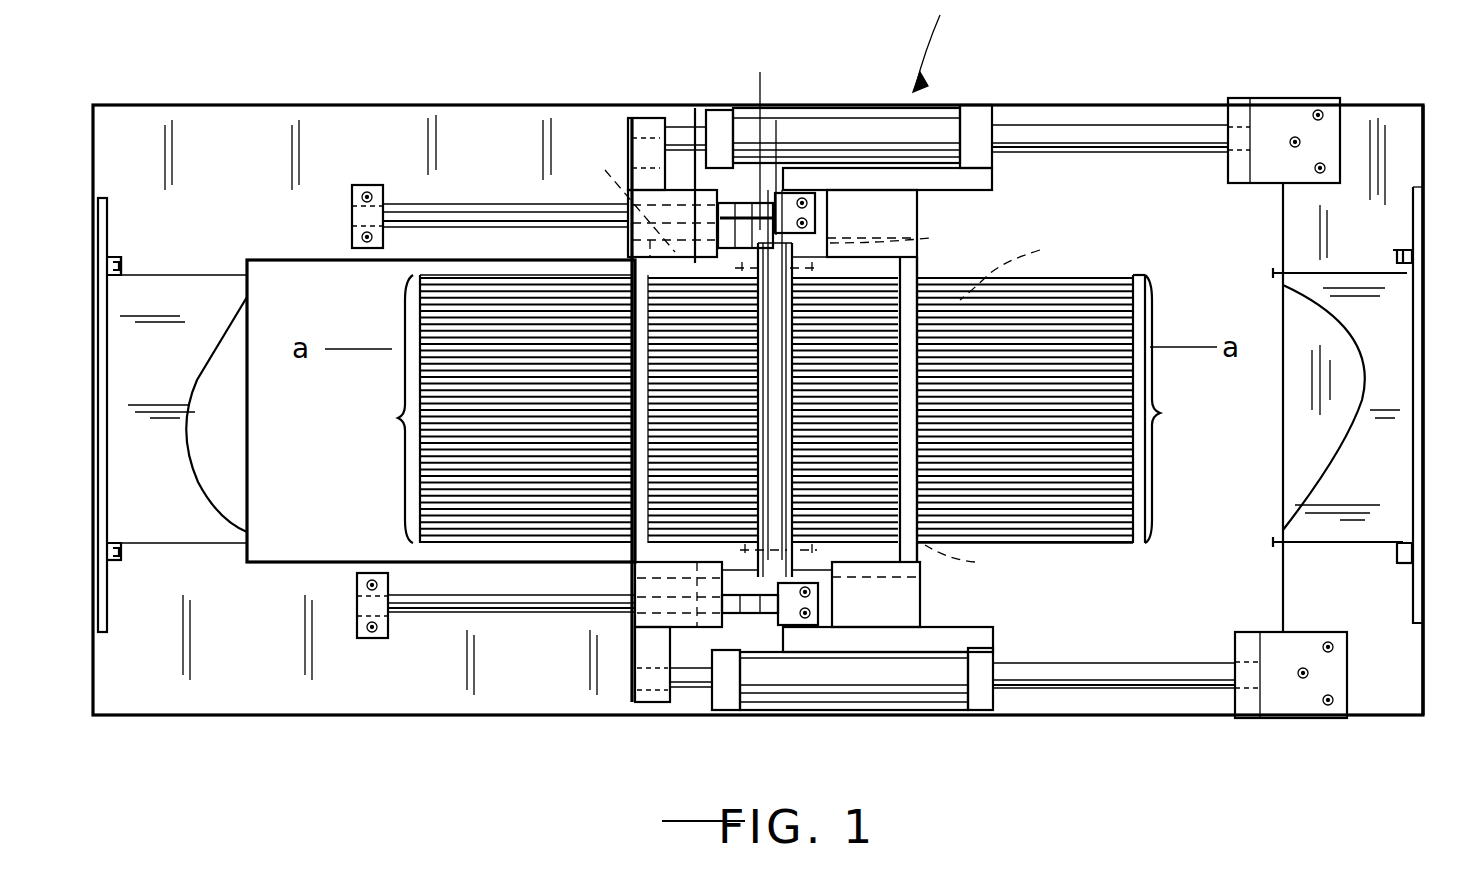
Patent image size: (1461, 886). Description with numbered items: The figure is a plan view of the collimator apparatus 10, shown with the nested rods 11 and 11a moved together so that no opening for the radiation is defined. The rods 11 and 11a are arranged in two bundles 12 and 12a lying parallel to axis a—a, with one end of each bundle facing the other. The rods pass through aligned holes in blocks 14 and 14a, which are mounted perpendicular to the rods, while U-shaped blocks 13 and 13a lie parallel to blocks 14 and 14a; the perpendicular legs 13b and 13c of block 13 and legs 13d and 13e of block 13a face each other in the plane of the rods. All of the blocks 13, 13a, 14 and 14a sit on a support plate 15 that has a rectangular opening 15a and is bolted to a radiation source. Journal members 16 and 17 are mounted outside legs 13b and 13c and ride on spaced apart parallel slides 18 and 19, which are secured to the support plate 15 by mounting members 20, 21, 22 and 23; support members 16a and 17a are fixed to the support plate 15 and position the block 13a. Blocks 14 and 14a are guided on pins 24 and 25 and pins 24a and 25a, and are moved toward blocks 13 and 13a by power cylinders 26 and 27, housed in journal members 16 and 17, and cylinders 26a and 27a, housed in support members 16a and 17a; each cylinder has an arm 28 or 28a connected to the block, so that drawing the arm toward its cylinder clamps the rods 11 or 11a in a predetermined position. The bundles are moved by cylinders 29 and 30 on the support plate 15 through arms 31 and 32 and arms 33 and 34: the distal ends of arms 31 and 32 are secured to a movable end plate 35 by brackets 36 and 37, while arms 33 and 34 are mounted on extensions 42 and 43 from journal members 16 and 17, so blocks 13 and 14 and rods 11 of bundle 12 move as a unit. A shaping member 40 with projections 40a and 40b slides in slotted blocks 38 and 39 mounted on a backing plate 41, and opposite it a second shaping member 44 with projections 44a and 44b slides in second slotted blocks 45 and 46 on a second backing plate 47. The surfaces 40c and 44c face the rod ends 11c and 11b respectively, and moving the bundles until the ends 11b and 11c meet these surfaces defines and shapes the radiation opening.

The collimator apparatus 10 is at (941, 46).
The rods 11 is at (437, 303).
The rods 11a is at (1112, 298).
The ends 11b is at (420, 500).
The ends 11c is at (1137, 477).
The bundle 12 is at (384, 409).
The bundle 12a is at (1180, 409).
The block 13 is at (655, 300).
The block 13a is at (905, 270).
The leg 13b is at (697, 118).
The leg 13c is at (690, 550).
The leg 13d is at (1027, 272).
The leg 13e is at (920, 575).
The block 14 is at (777, 210).
The block 14a is at (792, 185).
The support plate 15 is at (240, 173).
The rectangular opening 15a is at (298, 280).
The journal member 16 is at (632, 205).
The support member 16a is at (903, 208).
The journal member 17 is at (660, 627).
The support member 17a is at (930, 595).
The slide 18 is at (455, 214).
The slide 19 is at (445, 612).
The mounting member 20 is at (370, 190).
The mounting member 21 is at (370, 613).
The mounting member 22 is at (812, 200).
The mounting member 23 is at (773, 615).
The pin 24 is at (768, 305).
The pin 24a is at (910, 235).
The pin 25 is at (730, 522).
The pin 25a is at (795, 520).
The power cylinder 26 is at (700, 616).
The cylinder 26a is at (969, 381).
The power cylinder 27 is at (623, 195).
The cylinder 27a is at (976, 561).
The arm 28 is at (730, 225).
The arm 28a is at (745, 613).
The cylinder 29 is at (806, 142).
The cylinder 30 is at (915, 695).
The arm 31 is at (1070, 140).
The arm 32 is at (1048, 700).
The arm 33 is at (675, 128).
The arm 34 is at (698, 690).
The movable end plate 35 is at (1393, 122).
The bracket 36 is at (1268, 118).
The bracket 37 is at (1278, 700).
The slotted block 38 is at (1400, 252).
The slotted block 39 is at (1405, 580).
The shaping member 40 is at (1395, 475).
The projection 40a is at (1408, 277).
The projection 40b is at (1395, 548).
The surface 40c is at (1350, 427).
The backing plate 41 is at (1398, 512).
The extension 42 is at (638, 118).
The extension 43 is at (655, 700).
The second shaping member 44 is at (198, 283).
The projection 44a is at (98, 272).
The projection 44b is at (115, 545).
The surface 44c is at (210, 393).
The second slotted block 45 is at (121, 258).
The second slotted block 46 is at (125, 560).
The second backing plate 47 is at (97, 372).